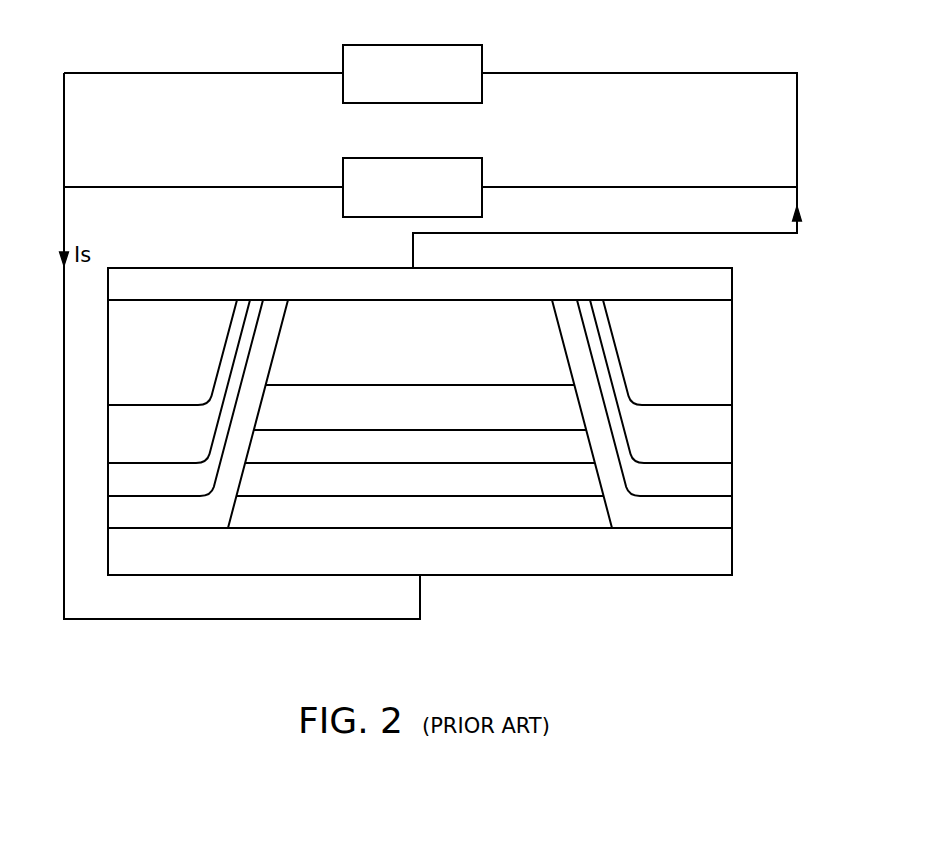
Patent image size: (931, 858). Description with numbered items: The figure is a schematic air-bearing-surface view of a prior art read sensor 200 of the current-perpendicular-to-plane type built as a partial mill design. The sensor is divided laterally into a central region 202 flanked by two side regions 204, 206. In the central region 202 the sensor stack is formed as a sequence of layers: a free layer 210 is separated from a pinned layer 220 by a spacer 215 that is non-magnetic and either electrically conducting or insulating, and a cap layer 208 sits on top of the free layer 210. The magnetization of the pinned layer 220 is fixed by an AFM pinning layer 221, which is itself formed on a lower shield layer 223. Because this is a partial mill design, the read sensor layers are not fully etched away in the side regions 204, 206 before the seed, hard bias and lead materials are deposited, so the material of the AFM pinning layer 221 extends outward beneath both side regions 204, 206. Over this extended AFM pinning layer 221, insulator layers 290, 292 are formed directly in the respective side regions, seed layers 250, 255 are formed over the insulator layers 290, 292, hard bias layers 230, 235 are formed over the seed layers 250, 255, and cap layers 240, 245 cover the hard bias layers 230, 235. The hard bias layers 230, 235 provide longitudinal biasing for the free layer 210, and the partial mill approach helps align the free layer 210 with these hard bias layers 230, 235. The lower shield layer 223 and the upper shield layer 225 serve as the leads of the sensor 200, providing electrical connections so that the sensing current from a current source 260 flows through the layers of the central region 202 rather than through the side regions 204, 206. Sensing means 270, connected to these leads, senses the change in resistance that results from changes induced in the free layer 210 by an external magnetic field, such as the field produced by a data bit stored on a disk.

The read sensor 200 is at (660, 577).
The central region 202 is at (386, 246).
The side region 204 is at (288, 249).
The side region 206 is at (732, 250).
The cap layer 208 is at (503, 376).
The free layer 210 is at (503, 424).
The spacer 215 is at (528, 456).
The pinned layer 220 is at (528, 490).
The AFM pinning layer 221 is at (503, 524).
The shield layer 223 is at (535, 566).
The shield layer 225 is at (535, 296).
The hard bias layer 230 is at (120, 442).
The hard bias layer 235 is at (723, 436).
The cap layer 240 is at (175, 358).
The cap layer 245 is at (682, 358).
The seed layer 250 is at (116, 482).
The seed layer 255 is at (723, 481).
The current source 260 is at (482, 173).
The sensing means 270 is at (482, 62).
The insulator layer 290 is at (161, 528).
The insulator layer 292 is at (728, 517).